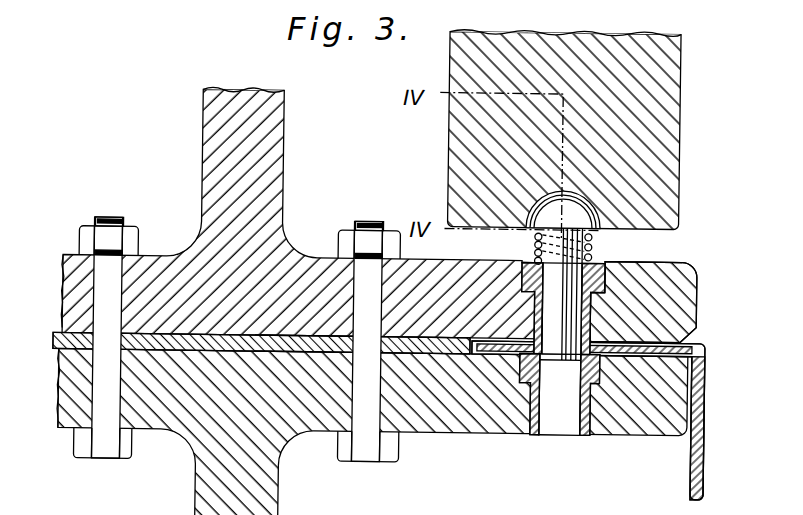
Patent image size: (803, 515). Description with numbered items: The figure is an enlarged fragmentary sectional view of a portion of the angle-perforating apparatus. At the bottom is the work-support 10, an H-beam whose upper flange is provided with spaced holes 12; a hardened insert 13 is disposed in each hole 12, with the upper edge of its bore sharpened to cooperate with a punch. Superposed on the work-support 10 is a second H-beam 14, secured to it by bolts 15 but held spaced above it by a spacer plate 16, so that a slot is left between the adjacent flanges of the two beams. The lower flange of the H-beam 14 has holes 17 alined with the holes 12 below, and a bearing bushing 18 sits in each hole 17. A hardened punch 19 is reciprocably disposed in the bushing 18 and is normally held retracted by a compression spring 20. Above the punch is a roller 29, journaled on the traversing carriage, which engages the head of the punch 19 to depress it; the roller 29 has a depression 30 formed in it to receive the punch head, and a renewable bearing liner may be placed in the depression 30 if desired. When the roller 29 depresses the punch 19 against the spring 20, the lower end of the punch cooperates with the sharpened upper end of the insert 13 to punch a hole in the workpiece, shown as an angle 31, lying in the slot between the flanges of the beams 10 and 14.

The work-support 10 is at (205, 504).
The holes 12 is at (529, 414).
The hardened inserts 13 is at (585, 429).
The H-beam 14 is at (212, 156).
The bolts 15 is at (108, 222).
The spacer plate 16 is at (62, 341).
The holes 17 is at (600, 294).
The bearing bushings 18 is at (606, 258).
The hardened punch 19 is at (567, 274).
The compression springs 20 is at (534, 238).
The rollers 29 is at (657, 136).
The depressions 30 is at (596, 208).
The angle 31 is at (705, 333).